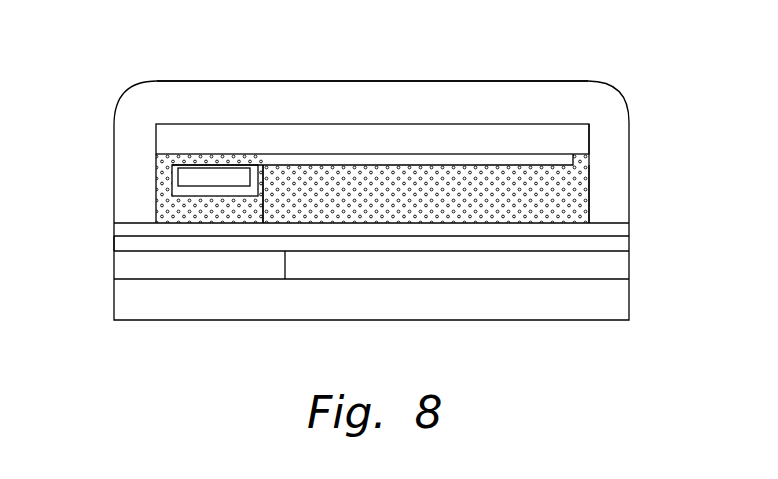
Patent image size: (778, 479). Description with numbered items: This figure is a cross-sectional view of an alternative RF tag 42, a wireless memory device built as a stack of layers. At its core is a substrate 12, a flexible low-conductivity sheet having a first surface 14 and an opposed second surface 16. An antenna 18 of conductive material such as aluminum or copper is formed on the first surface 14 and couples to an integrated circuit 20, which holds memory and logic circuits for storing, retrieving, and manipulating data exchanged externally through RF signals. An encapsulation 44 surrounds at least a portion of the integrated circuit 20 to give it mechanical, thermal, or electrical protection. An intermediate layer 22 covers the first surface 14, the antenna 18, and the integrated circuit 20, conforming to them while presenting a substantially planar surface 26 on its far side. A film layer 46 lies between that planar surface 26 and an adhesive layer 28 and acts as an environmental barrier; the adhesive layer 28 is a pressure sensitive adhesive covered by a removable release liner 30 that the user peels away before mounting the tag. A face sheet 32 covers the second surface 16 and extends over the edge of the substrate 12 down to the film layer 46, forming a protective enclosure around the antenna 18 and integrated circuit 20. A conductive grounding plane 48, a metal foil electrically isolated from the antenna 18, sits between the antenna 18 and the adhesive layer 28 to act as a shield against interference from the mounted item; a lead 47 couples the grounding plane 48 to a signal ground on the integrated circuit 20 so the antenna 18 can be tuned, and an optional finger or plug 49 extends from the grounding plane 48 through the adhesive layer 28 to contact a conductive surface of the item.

The RF tag 42 is at (101, 66).
The face sheet 32 is at (446, 81).
The second surface 16 is at (553, 124).
The substrate 12 is at (590, 134).
The first surface 14 is at (588, 157).
The antenna 18 is at (582, 182).
The intermediate layer 22 is at (590, 197).
The substantially planar surface 26 is at (579, 224).
The adhesive layer 28 is at (629, 263).
The release liner 30 is at (629, 308).
The integrated circuit 20 is at (157, 160).
The encapsulation 44 is at (157, 180).
The film layer 46 is at (114, 232).
The lead 47 is at (265, 176).
The conductive grounding plane 48 is at (114, 243).
The finger or plug 49 is at (286, 268).